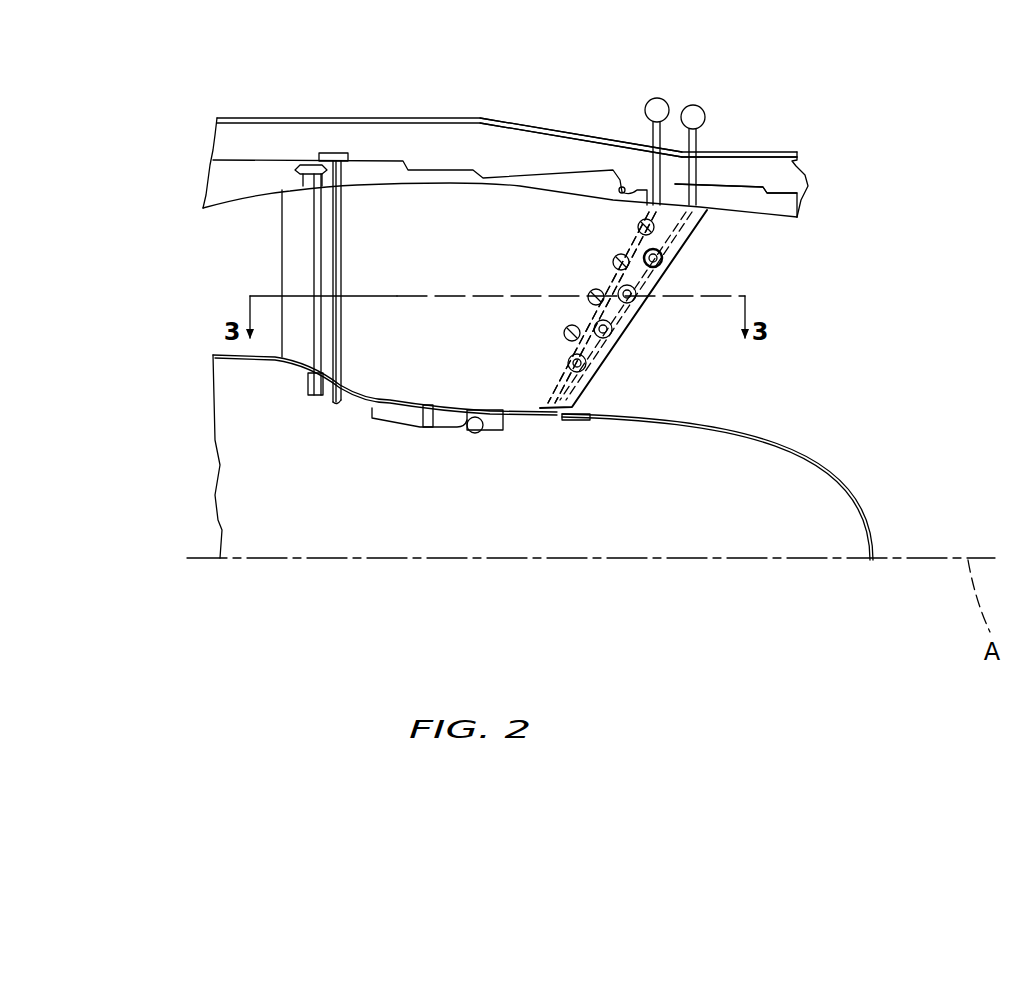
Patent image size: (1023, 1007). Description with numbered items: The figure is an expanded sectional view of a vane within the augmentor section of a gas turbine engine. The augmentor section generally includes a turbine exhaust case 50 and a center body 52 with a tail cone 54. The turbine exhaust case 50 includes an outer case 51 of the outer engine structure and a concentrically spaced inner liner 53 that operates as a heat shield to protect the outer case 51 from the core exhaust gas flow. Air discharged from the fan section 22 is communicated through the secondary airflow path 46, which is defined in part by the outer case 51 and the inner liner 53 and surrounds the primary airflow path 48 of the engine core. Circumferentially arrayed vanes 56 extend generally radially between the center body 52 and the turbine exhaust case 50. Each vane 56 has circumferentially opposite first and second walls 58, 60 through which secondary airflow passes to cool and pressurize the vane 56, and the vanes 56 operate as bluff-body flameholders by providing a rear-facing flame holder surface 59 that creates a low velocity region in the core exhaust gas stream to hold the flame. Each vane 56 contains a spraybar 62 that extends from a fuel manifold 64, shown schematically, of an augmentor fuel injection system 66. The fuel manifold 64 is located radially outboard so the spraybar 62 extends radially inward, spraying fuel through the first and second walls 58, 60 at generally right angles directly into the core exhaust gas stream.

The fan section 22 is at (195, 146).
The secondary airflow path 46 is at (478, 135).
The primary airflow path 48 is at (198, 277).
The turbine exhaust case 50 is at (557, 105).
The outer case 51 is at (588, 135).
The center body 52 is at (255, 499).
The inner liner 53 is at (787, 208).
The tail cone 54 is at (875, 508).
The vane 56 is at (451, 267).
The first wall 58 is at (613, 340).
The rear-facing flame holder surface 59 is at (590, 383).
The second wall 60 is at (672, 272).
The spraybar 62 is at (630, 310).
The fuel manifold 64 is at (691, 106).
The augmentor fuel injection system 66 is at (745, 136).